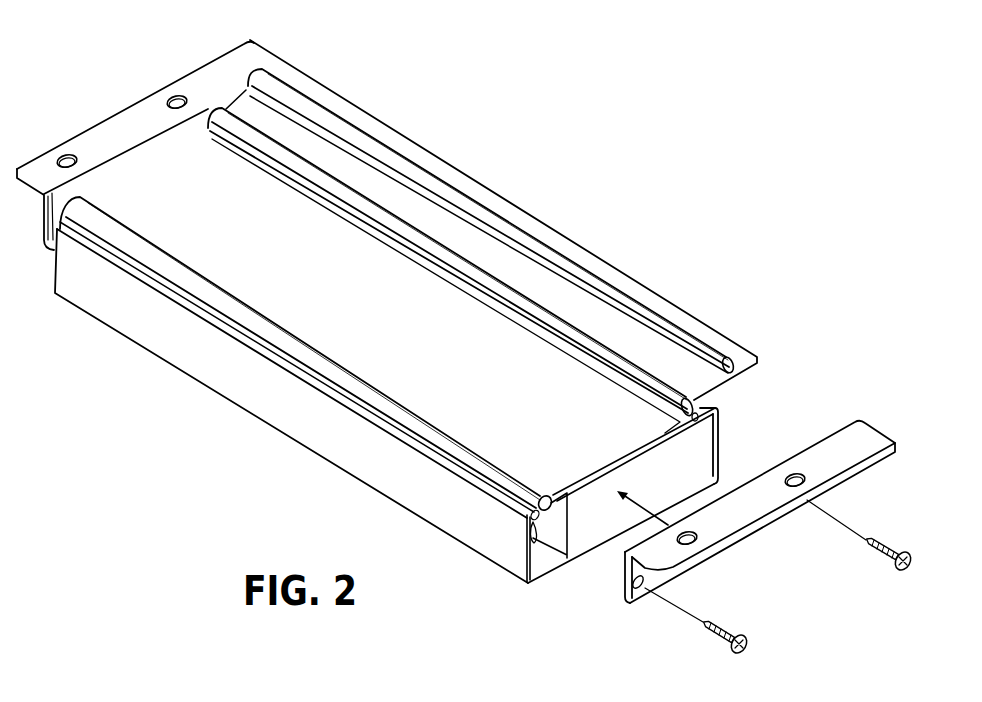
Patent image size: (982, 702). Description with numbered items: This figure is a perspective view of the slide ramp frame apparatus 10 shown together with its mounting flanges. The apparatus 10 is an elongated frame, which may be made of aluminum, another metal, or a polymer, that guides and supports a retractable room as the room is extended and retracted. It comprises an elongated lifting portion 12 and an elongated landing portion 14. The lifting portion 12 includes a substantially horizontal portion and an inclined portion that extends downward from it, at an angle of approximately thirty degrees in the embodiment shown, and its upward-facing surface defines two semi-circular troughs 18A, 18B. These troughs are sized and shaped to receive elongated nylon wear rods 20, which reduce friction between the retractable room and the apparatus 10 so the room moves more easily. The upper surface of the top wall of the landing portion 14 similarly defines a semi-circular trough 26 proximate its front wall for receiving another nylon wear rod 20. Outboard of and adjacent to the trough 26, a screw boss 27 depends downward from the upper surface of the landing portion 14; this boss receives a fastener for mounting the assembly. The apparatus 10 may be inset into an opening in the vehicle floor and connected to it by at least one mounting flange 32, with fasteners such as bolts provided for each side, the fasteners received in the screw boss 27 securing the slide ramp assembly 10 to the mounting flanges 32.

The slide ramp frame apparatus 10 is at (230, 434).
The lifting portion 12 is at (528, 222).
The landing portion 14 is at (595, 523).
The semi-circular trough 18A is at (735, 377).
The semi-circular trough 18B is at (698, 414).
The nylon wear rod 20 is at (641, 382).
The semi-circular trough 26 is at (546, 496).
The screw boss 27 is at (525, 557).
The mounting flange 32 is at (203, 84).